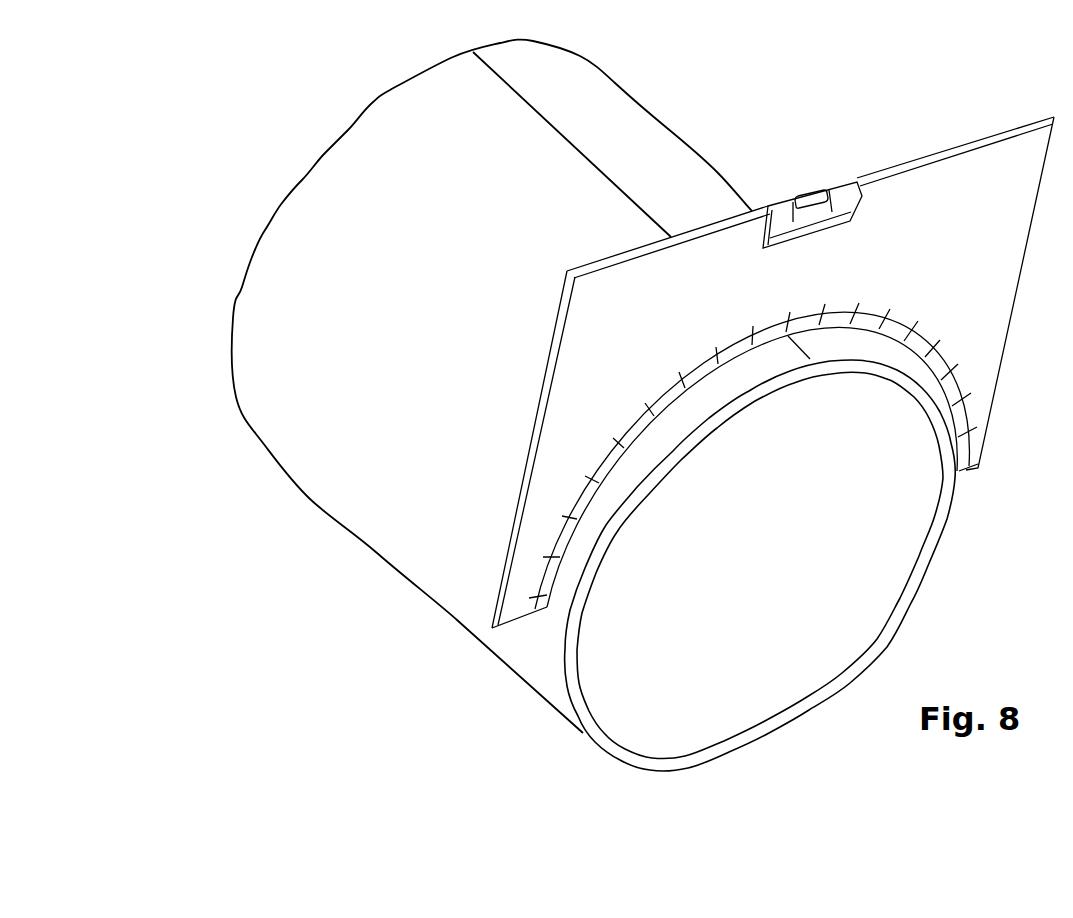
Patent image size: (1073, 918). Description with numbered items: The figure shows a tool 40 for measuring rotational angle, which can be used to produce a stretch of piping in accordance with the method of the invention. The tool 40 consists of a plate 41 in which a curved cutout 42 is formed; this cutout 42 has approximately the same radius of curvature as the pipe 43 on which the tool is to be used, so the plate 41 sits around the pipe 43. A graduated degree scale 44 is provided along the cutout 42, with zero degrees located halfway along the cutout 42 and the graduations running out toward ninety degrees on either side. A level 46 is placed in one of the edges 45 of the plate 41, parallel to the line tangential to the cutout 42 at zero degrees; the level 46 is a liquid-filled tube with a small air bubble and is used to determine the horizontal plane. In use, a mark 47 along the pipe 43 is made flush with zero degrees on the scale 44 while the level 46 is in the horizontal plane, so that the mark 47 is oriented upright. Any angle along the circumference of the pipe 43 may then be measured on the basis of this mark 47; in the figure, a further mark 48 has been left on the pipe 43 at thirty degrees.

The tool 40 is at (565, 378).
The plate 41 is at (570, 270).
The curved cutout 42 is at (582, 478).
The pipe 43 is at (293, 430).
The graduated degree scale 44 is at (568, 522).
The edge of the plate 45 is at (897, 165).
The level 46 is at (833, 190).
The mark 47 is at (795, 340).
The mark 48 is at (674, 388).